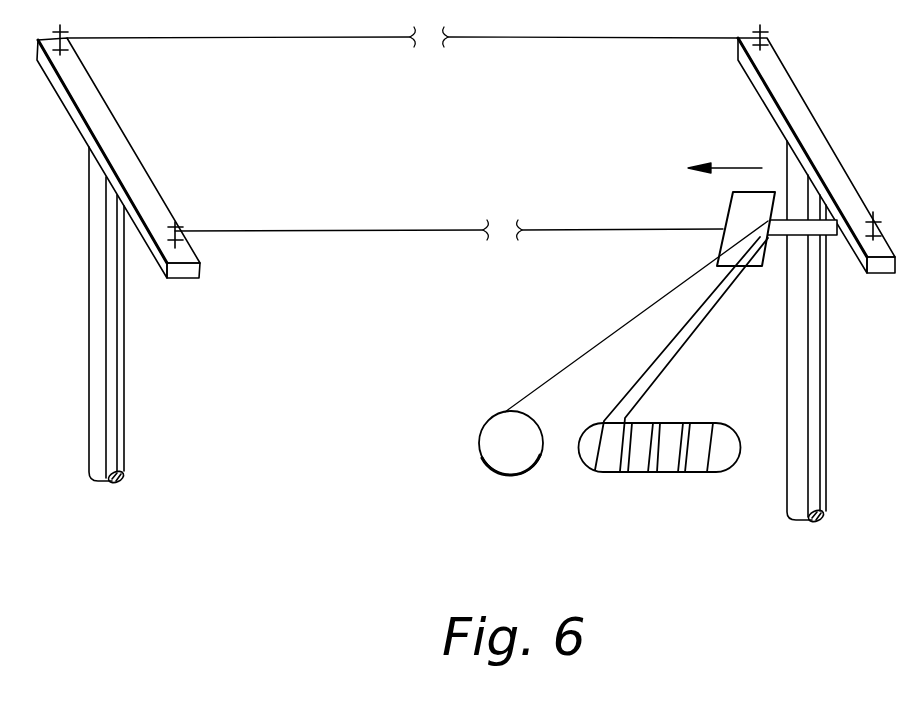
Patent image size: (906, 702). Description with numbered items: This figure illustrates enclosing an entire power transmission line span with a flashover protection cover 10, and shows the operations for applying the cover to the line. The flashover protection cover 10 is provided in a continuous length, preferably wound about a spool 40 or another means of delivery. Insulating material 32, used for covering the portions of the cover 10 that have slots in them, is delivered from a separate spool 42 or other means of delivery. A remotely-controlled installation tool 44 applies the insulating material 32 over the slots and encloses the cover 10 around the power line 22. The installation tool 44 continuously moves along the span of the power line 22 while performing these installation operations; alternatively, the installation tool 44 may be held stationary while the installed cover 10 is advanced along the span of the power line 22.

The flashover protection cover 10 is at (646, 372).
The power line 22 is at (557, 230).
The insulating material 32 is at (553, 378).
The spool 40 is at (717, 423).
The spool 42 is at (479, 448).
The remotely-controlled installation tool 44 is at (747, 268).